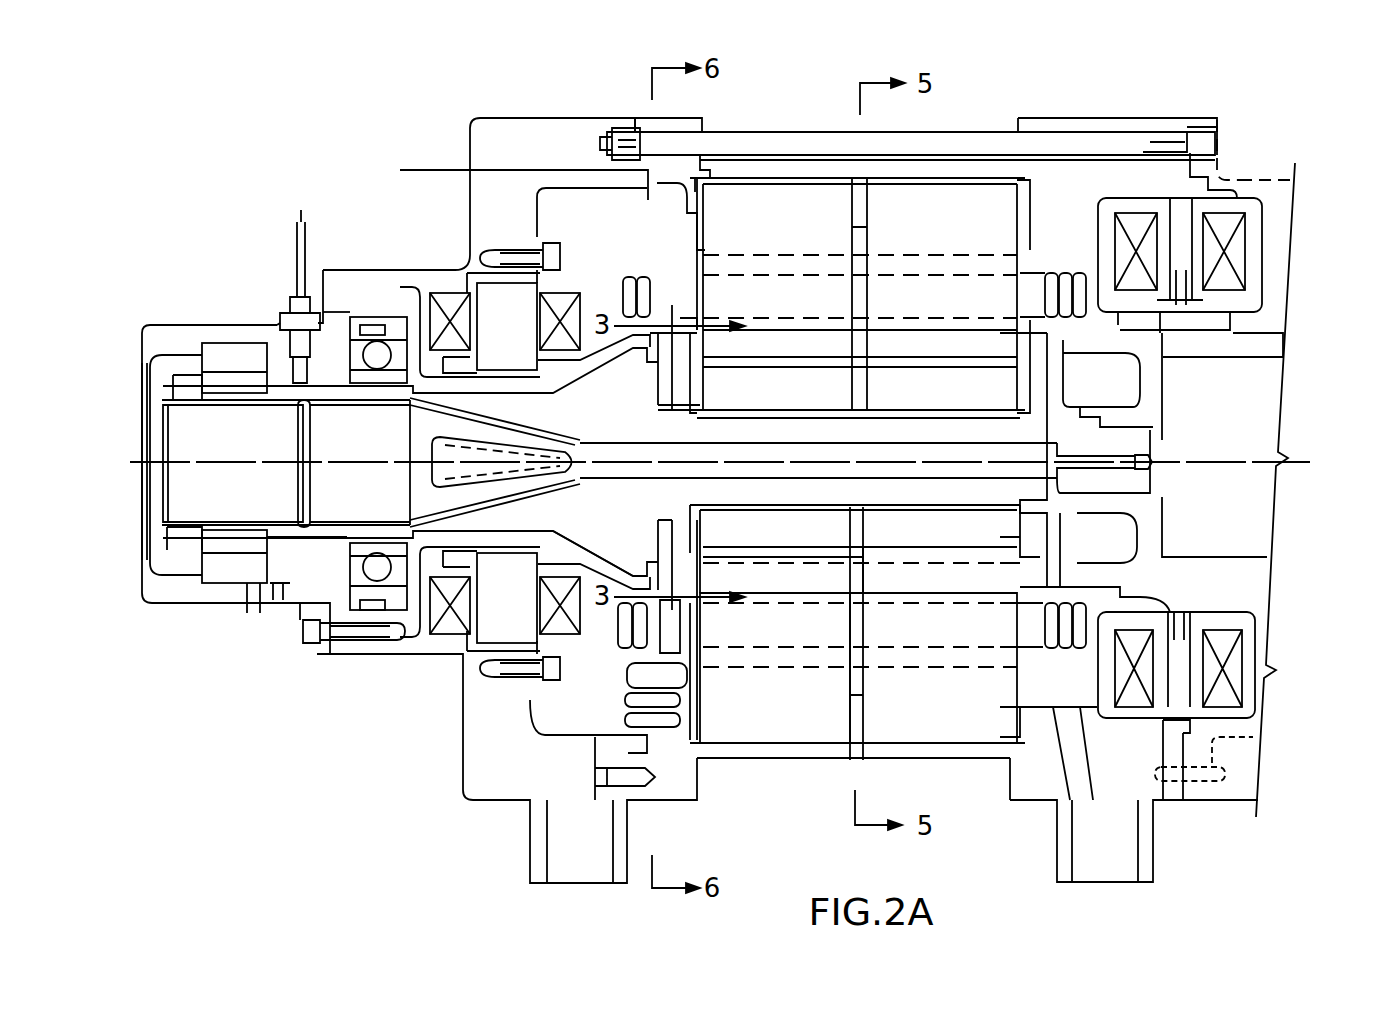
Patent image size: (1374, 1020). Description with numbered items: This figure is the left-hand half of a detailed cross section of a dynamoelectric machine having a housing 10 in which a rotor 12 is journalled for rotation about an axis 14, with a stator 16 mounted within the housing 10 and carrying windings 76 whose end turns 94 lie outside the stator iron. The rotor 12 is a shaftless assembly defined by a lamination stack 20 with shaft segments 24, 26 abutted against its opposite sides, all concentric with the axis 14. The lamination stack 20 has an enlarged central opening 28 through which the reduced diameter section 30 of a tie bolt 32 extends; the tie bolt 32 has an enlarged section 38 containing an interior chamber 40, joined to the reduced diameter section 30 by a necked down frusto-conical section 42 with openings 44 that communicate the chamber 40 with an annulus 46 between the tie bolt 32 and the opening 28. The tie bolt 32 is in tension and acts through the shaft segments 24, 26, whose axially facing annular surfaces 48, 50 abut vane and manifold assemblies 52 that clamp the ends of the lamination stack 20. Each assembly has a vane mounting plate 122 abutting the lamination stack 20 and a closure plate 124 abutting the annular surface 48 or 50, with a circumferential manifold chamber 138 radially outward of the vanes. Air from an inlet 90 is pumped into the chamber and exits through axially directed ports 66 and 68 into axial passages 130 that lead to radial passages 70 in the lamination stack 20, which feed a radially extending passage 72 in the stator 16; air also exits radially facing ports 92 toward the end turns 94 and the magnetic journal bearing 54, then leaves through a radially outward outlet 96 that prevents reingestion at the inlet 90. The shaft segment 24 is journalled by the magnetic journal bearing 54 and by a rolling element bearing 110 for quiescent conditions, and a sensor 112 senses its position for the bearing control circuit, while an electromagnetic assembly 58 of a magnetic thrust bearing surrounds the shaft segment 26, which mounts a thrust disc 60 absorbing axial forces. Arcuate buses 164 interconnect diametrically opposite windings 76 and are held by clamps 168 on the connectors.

The housing 10 is at (565, 106).
The rotor 12 is at (969, 614).
The axis 14 is at (1305, 462).
The stator 16 is at (977, 180).
The lamination stack 20 is at (847, 520).
The shaft segment 24 is at (578, 532).
The shaft segment 26 is at (1160, 404).
The central opening 28 is at (775, 420).
The reduced diameter section 30 is at (862, 447).
The tie bolt 32 is at (680, 443).
The enlarged section 38 is at (303, 420).
The interior chamber 40 is at (332, 503).
The frusto-conical section 42 is at (415, 417).
The openings 44 is at (512, 427).
The annulus 46 is at (983, 440).
The annular surface 48 is at (670, 360).
The annular surface 50 is at (1049, 565).
The vane and manifold assemblies 52 is at (1057, 440).
The magnetic journal bearing 54 is at (502, 634).
The electromagnetic assembly 58 is at (1233, 195).
The thrust disc 60 is at (1180, 330).
The axially directed ports 66 is at (1015, 348).
The axially directed ports 68 is at (700, 420).
The radial passages 70 is at (860, 545).
The radially extending passage 72 is at (860, 618).
The windings 76 is at (935, 250).
The inlet 90 is at (146, 410).
The radially facing ports 92 is at (688, 328).
The end turns 94 is at (622, 276).
The outlet 96 is at (290, 602).
The rolling element bearing 110 is at (397, 333).
The sensor 112 is at (288, 318).
The vane mounting plate 122 is at (712, 505).
The closure plate 124 is at (660, 510).
The axial passages 130 is at (815, 375).
The circumferential manifold chamber 138 is at (700, 318).
The arcuate buses 164 is at (690, 722).
The clamps 168 is at (625, 668).